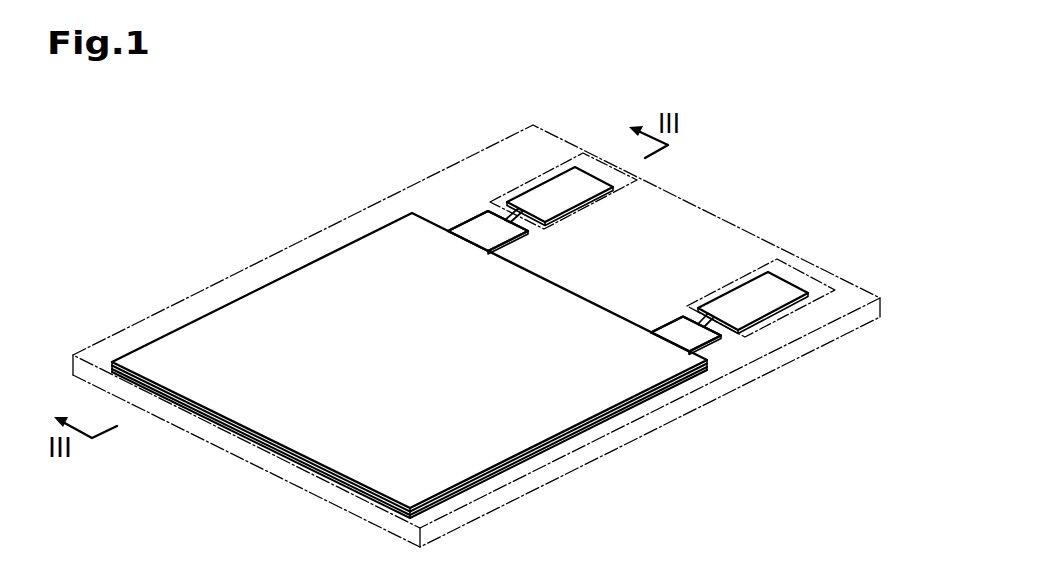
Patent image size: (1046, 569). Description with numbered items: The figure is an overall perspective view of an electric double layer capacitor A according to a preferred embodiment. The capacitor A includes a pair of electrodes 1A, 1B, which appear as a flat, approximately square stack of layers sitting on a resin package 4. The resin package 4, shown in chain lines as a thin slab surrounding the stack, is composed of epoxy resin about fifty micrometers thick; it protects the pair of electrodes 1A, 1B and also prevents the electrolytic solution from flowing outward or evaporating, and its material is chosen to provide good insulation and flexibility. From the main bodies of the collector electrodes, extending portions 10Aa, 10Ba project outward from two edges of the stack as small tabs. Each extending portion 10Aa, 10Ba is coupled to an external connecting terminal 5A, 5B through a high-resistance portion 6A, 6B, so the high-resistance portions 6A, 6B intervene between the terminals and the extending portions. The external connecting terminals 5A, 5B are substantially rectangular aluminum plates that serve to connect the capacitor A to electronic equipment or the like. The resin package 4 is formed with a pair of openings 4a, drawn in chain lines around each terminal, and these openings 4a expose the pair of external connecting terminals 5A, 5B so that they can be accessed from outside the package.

The electric double layer capacitor A is at (206, 239).
The electrode 1A is at (645, 392).
The electrode 1B is at (567, 438).
The resin package 4 is at (703, 207).
The opening 4a is at (603, 161).
The external connecting terminal 5A is at (557, 190).
The external connecting terminal 5B is at (763, 298).
The high-resistance portion 6A is at (493, 213).
The high-resistance portion 6B is at (709, 318).
The extending portion 10Aa is at (477, 227).
The extending portion 10Ba is at (699, 343).